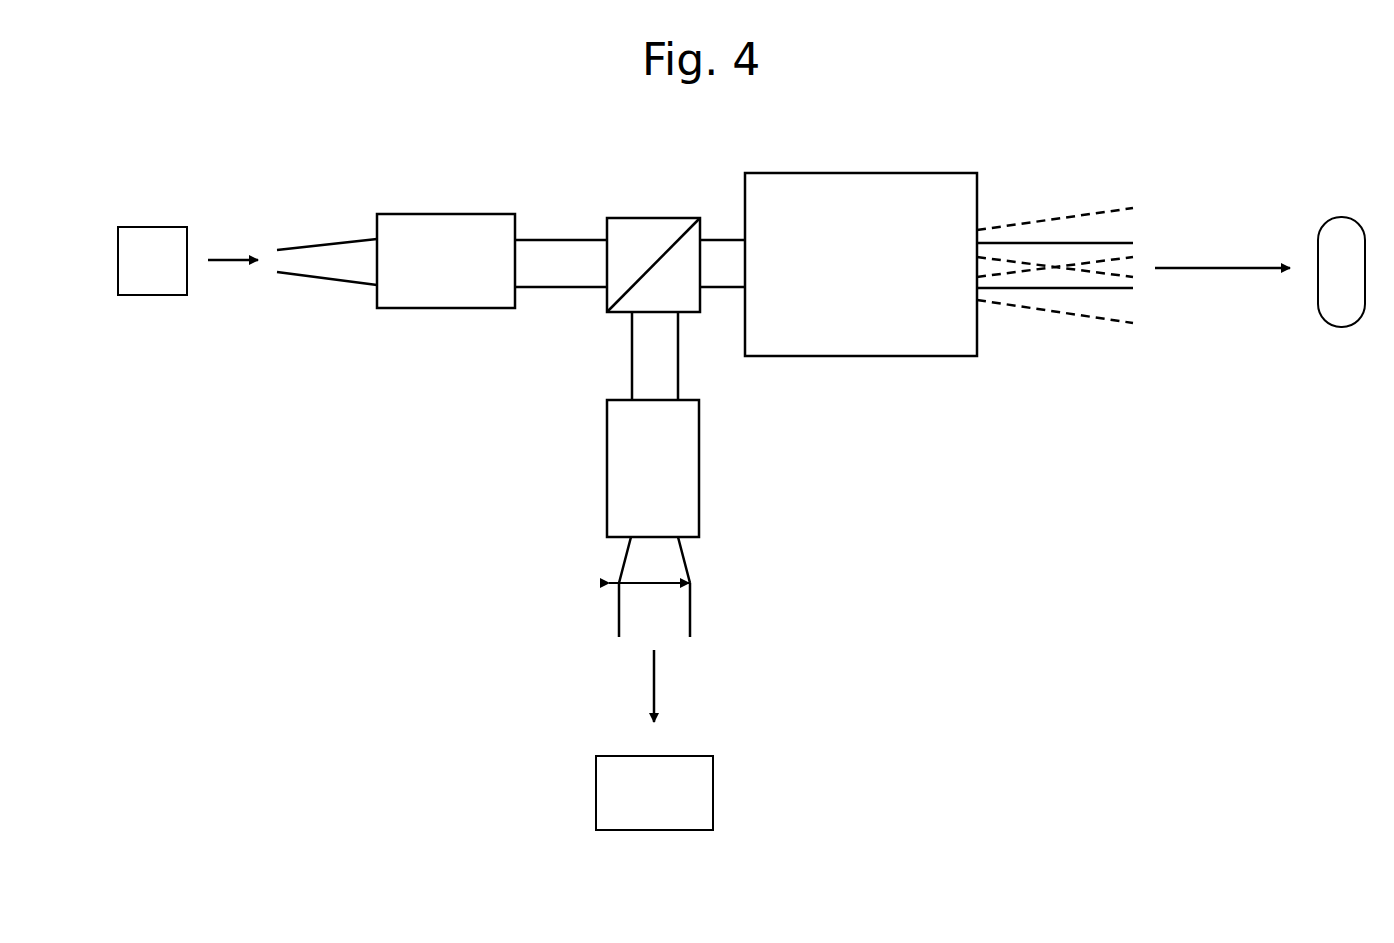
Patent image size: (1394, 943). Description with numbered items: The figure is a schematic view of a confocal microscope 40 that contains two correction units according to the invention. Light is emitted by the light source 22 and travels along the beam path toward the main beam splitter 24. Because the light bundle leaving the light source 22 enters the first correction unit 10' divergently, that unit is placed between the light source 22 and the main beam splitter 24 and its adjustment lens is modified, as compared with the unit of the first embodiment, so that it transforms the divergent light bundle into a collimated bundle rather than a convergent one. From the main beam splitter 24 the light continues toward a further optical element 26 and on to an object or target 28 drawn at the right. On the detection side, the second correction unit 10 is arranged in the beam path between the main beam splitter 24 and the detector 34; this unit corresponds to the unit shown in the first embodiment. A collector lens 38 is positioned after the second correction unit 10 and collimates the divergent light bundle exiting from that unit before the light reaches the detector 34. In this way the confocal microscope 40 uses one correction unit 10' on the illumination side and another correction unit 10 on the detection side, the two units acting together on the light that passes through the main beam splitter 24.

The light source 22 is at (180, 227).
The first correction unit 10' is at (446, 239).
The confocal microscope 40 is at (518, 140).
The main beam splitter 24 is at (687, 207).
The optical element / lens unit 26 is at (805, 168).
The object / target 28 is at (1340, 217).
The second correction unit 10 is at (676, 468).
The collector lens 38 is at (700, 583).
The detector 34 is at (714, 785).